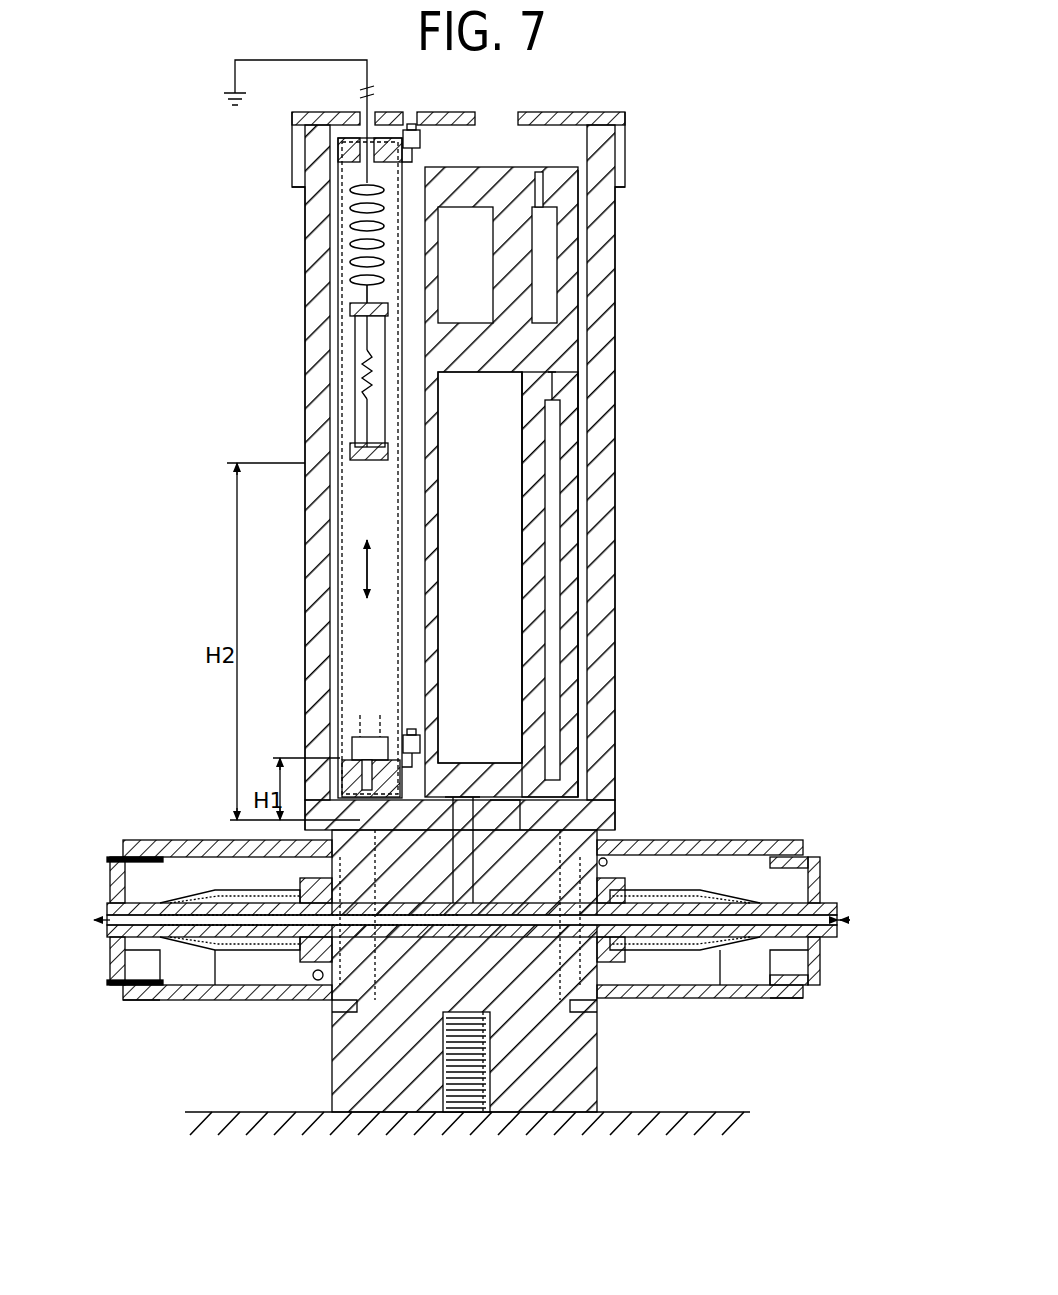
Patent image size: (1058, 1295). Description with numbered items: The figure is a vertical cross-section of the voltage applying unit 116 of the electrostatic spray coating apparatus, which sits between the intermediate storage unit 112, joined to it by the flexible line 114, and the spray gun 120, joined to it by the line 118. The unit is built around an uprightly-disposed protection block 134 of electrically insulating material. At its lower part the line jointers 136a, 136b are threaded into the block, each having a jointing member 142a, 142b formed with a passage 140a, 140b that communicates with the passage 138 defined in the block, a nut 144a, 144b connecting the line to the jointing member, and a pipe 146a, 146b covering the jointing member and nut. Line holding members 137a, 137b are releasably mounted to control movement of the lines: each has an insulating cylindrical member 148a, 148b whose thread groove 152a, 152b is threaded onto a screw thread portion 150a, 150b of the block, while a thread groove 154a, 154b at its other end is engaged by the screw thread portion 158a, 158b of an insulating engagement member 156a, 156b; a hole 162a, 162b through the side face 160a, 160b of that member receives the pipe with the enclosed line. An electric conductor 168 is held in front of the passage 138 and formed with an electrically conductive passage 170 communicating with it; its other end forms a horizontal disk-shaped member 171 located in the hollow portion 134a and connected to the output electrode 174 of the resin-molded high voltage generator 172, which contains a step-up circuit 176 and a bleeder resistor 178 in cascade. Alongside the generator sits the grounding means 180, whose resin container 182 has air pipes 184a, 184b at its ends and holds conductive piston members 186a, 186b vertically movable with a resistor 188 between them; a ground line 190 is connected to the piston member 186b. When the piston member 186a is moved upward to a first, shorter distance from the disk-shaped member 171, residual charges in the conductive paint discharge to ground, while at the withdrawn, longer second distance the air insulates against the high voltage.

The voltage applying unit 116 is at (664, 196).
The protection block 134 is at (622, 496).
The hollow portion 134a is at (583, 325).
The high voltage generator 172 is at (572, 452).
The bleeder resistor 178 is at (555, 578).
The step-up circuit 176 is at (500, 632).
The container 182 is at (405, 527).
The ground line 190 is at (352, 220).
The grounding means 180 is at (338, 292).
The piston member 186b is at (352, 318).
The resistor 188 is at (365, 390).
The piston member 186a is at (350, 452).
The air pipe 184a is at (421, 140).
The air pipe 184b is at (420, 735).
The electric conductor 168 is at (440, 800).
The disk-shaped member 171 is at (450, 800).
The output electrode 174 is at (500, 825).
The screw thread portion 150a is at (570, 840).
The screw thread portion 150b is at (340, 990).
The thread groove 152a is at (604, 856).
The thread groove 152b is at (315, 985).
The line jointer 136a is at (660, 885).
The line jointer 136b is at (215, 890).
The line holding member 137a is at (774, 822).
The line holding member 137b is at (150, 838).
The engagement member 156a is at (815, 857).
The engagement member 156b is at (122, 857).
The hole 162a is at (886, 867).
The hole 162b is at (120, 870).
The pipe 146a is at (650, 985).
The pipe 146b is at (300, 890).
The flexible line 114 is at (765, 910).
The intermediate storage unit 112 is at (878, 927).
The line 118 is at (170, 925).
The spray gun 120 is at (77, 927).
The nut 144a is at (680, 990).
The nut 144b is at (300, 940).
The side face 160a is at (818, 965).
The side face 160b is at (115, 950).
The screw thread portion 158a is at (803, 998).
The screw thread portion 158b is at (128, 1000).
The thread groove 154a is at (814, 1039).
The thread groove 154b is at (150, 1000).
The cylindrical member 148a is at (720, 1000).
The cylindrical member 148b is at (240, 1000).
The jointing member 142a is at (600, 980).
The jointing member 142b is at (370, 950).
The passage 140a is at (600, 1000).
The passage 140b is at (430, 1000).
The electrically conductive passage 170 is at (470, 1040).
The passage 138 is at (500, 1000).